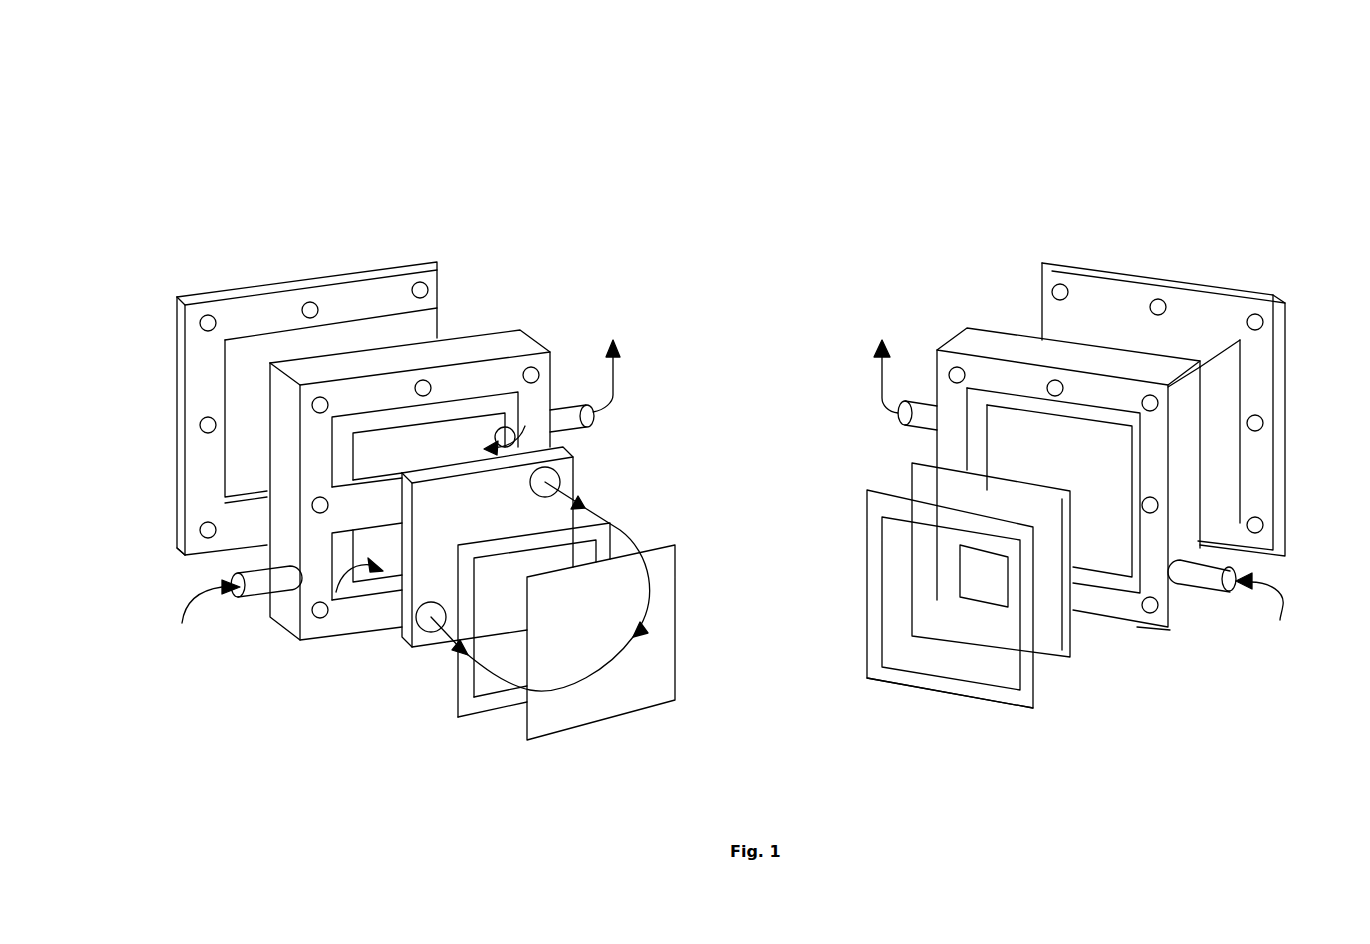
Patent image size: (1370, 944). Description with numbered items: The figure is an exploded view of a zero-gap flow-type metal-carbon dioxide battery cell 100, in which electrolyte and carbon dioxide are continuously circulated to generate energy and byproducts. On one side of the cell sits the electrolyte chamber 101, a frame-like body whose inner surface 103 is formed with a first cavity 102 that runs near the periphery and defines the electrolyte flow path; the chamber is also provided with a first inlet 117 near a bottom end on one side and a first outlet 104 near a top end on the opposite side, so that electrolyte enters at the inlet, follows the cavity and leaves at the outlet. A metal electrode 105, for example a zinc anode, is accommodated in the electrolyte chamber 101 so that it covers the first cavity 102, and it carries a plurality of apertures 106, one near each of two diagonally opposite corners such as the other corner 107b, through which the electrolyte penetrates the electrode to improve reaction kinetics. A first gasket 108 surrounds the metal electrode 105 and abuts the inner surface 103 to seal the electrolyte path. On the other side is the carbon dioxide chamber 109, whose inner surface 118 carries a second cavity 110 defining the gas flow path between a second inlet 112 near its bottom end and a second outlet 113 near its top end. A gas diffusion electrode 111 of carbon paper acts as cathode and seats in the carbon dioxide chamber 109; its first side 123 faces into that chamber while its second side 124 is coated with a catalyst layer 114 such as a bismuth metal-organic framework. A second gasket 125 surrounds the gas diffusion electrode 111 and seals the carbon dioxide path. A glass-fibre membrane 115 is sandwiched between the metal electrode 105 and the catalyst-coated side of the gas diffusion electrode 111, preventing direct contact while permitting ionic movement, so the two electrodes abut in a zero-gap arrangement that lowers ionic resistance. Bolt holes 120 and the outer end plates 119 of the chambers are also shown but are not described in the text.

The zero-gap flow-type metal-carbon dioxide battery cell 100 is at (803, 163).
The electrolyte chamber 101 is at (490, 343).
The first cavity 102 is at (548, 386).
The inner surface 103 is at (297, 640).
The first outlet 104 is at (597, 417).
The metal electrode 105 is at (405, 630).
The plurality of apertures 106 is at (570, 482).
The other corner 107b is at (562, 462).
The first gasket 108 is at (467, 677).
The carbon dioxide chamber 109 is at (1020, 347).
The second cavity 110 is at (970, 401).
The gas diffusion electrode 111 is at (1140, 607).
The second inlet 112 is at (1207, 573).
The second outlet 113 is at (900, 422).
The catalyst layer 114 is at (1010, 577).
The membrane 115 is at (628, 690).
The first inlet 117 is at (228, 622).
The inner surface 118 is at (1260, 520).
The end plate 119 is at (387, 290).
The bolt holes 120 is at (413, 387).
The first side 123 is at (927, 588).
The second side 124 is at (890, 528).
The second gasket 125 is at (1033, 698).